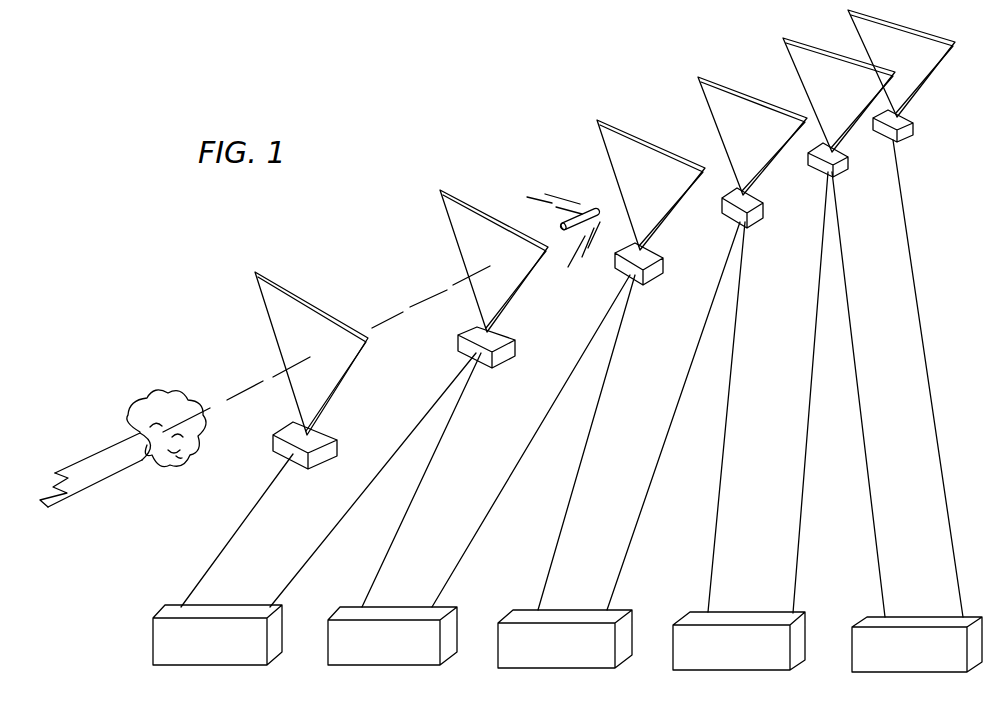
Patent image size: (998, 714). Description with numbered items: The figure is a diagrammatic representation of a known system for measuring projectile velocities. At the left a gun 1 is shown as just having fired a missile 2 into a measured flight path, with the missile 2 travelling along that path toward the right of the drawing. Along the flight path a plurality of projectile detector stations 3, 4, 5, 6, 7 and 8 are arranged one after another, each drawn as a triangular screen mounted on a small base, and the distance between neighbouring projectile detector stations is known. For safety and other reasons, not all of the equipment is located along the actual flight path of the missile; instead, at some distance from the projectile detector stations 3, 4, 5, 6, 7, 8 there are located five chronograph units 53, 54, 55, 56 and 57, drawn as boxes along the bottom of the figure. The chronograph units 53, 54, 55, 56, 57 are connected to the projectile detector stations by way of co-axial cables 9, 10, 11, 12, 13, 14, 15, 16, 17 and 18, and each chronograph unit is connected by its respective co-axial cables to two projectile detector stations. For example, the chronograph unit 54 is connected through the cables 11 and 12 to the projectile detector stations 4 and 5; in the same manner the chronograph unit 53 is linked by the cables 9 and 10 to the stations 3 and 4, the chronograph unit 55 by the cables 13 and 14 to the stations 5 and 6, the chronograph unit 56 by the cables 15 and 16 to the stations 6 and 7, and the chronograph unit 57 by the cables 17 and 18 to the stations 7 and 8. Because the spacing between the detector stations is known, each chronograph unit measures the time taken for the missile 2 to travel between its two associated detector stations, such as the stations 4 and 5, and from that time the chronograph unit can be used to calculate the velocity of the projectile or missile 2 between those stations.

The gun 1 is at (86, 462).
The missile 2 is at (576, 220).
The projectile detector station 3 is at (297, 294).
The projectile detector station 4 is at (456, 197).
The projectile detector station 5 is at (620, 125).
The projectile detector station 6 is at (712, 82).
The projectile detector station 7 is at (798, 43).
The projectile detector station 8 is at (936, 40).
The co-axial cable 9 is at (237, 526).
The co-axial cable 10 is at (331, 532).
The co-axial cable 11 is at (397, 533).
The co-axial cable 12 is at (475, 535).
The co-axial cable 13 is at (560, 535).
The co-axial cable 14 is at (632, 537).
The co-axial cable 15 is at (715, 539).
The co-axial cable 16 is at (799, 541).
The co-axial cable 17 is at (876, 541).
The co-axial cable 18 is at (952, 543).
The chronograph unit 53 is at (174, 608).
The chronograph unit 54 is at (352, 611).
The chronograph unit 55 is at (530, 613).
The chronograph unit 56 is at (697, 617).
The chronograph unit 57 is at (870, 619).